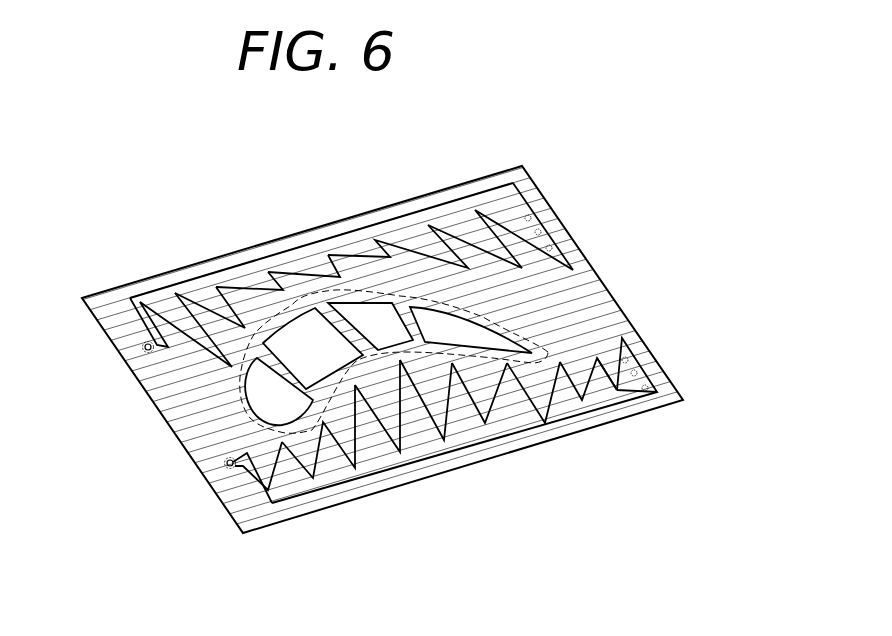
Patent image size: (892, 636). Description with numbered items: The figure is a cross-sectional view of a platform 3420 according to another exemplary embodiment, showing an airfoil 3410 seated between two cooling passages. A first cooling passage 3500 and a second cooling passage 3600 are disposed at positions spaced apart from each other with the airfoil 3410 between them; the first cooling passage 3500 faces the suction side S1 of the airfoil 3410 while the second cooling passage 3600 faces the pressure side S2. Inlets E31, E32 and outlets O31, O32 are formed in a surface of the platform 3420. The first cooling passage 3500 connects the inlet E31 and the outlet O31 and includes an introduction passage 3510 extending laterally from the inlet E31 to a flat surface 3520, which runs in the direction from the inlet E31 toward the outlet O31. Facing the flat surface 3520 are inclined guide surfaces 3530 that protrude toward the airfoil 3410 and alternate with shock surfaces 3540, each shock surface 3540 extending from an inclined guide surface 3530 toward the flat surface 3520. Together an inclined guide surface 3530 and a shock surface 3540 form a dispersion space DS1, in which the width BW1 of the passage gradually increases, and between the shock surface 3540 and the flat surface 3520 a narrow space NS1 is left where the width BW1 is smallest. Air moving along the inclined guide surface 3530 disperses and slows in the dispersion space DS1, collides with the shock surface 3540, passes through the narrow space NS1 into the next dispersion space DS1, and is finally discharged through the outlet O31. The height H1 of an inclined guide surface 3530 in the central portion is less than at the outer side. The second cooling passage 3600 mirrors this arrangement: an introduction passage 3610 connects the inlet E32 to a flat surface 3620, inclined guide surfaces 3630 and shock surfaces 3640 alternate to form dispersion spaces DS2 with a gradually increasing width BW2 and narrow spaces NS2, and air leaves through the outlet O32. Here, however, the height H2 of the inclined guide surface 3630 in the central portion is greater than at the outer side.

The platform 3420 is at (190, 118).
The first cooling passage 3500 is at (168, 272).
The introduction passage 3510 is at (147, 332).
The flat surface 3520 is at (237, 270).
The inclined guide surface 3530 is at (297, 268).
The shock surface 3540 is at (315, 237).
The narrow space NS1 is at (432, 249).
The dispersion space DS1 is at (422, 200).
The height of inclined guide surface H1 is at (482, 266).
The outlet O31 is at (531, 215).
The suction side S1 is at (487, 317).
The width of first cooling passage BW1 is at (180, 286).
The inlet E31 is at (143, 347).
The outlet O32 is at (626, 352).
The height of inclined guide surface H2 is at (511, 369).
The width of second cooling passage BW2 is at (620, 383).
The airfoil 3410 is at (236, 414).
The inlet E32 is at (226, 464).
The introduction passage 3610 is at (247, 460).
The second cooling passage 3600 is at (322, 510).
The narrow space NS2 is at (355, 418).
The dispersion space DS2 is at (355, 470).
The flat surface 3620 is at (420, 455).
The inclined guide surface 3630 is at (481, 360).
The pressure side S2 is at (527, 420).
The shock surface 3640 is at (618, 397).